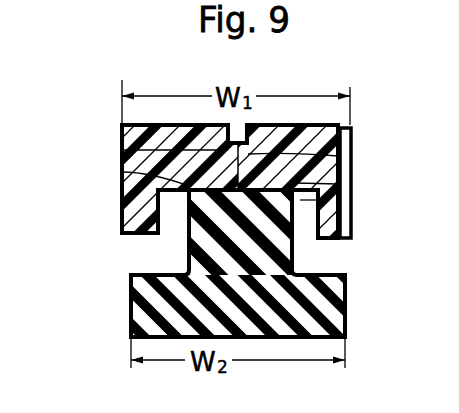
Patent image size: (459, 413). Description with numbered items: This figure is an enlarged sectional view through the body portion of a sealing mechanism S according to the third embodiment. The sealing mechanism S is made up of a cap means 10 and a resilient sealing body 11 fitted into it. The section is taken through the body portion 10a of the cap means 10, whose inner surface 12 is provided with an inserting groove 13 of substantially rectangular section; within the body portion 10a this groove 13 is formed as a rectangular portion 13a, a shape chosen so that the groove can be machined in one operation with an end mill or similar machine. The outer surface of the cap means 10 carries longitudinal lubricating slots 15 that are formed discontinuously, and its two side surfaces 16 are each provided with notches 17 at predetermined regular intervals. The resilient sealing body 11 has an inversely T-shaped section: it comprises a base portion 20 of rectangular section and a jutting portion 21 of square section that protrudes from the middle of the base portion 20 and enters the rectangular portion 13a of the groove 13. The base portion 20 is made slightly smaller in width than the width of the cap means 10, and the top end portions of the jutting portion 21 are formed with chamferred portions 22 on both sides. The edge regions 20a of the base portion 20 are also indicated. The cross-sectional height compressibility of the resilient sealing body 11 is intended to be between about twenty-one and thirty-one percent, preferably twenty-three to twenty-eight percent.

The cap means 10 is at (172, 148).
The body portion 10a is at (122, 199).
The resilient sealing body 11 is at (273, 336).
The inner surface 12 is at (155, 216).
The inserting groove 13 is at (168, 243).
The rectangular portion 13a is at (325, 240).
The lubricating slots 15 is at (338, 156).
The side surfaces 16 is at (120, 142).
The notches 17 is at (332, 200).
The base portion 20 is at (126, 330).
The side edge of base portion 20a is at (129, 308).
The jutting portion 21 is at (353, 220).
The chamferred portions 22 is at (121, 172).
The sealing mechanism S is at (314, 117).